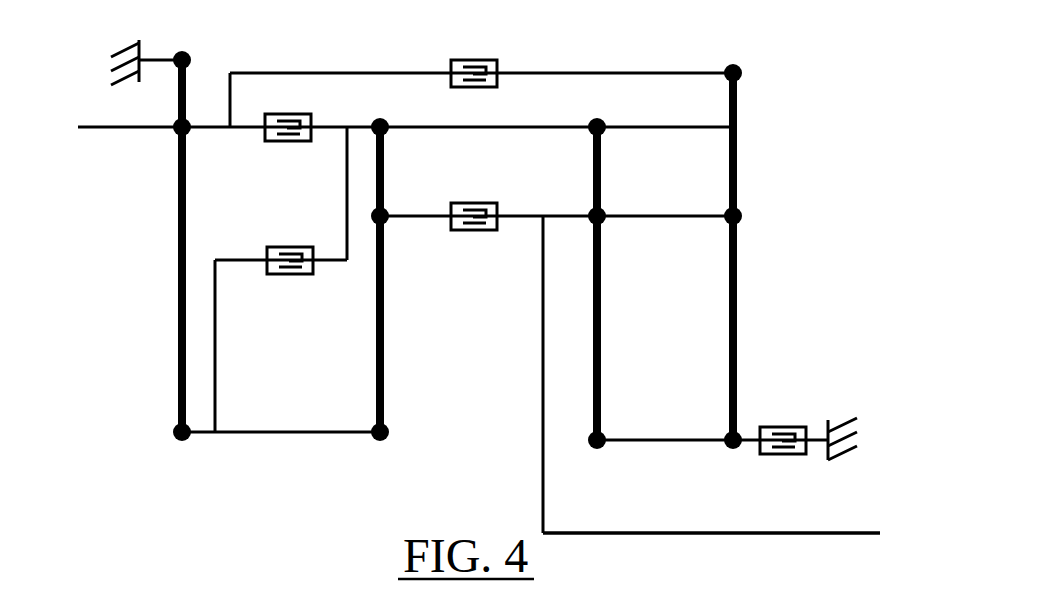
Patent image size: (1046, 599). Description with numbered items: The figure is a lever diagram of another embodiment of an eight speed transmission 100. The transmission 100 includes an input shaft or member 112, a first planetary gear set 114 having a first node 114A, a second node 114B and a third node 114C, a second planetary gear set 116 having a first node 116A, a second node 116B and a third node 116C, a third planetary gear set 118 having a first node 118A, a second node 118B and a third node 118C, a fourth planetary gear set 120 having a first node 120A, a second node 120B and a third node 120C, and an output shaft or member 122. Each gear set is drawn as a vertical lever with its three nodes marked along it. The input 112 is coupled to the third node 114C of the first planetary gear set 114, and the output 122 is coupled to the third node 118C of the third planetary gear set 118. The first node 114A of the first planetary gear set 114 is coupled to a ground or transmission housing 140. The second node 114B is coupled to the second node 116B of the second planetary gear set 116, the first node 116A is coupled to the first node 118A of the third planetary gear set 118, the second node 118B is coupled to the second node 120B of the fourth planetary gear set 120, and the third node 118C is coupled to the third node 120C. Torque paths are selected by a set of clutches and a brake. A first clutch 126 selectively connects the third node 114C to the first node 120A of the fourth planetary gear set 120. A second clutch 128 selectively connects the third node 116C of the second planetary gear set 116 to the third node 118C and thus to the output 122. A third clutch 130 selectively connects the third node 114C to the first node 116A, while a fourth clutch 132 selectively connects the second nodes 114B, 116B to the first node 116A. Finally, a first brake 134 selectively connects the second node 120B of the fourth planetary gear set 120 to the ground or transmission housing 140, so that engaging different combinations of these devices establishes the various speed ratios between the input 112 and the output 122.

The transmission 100 is at (776, 58).
The input shaft or member 112 is at (112, 125).
The first planetary gear set 114 is at (194, 456).
The first node 114A is at (190, 54).
The second node 114B is at (174, 440).
The third node 114C is at (176, 136).
The second planetary gear set 116 is at (360, 456).
The first node 116A is at (390, 120).
The second node 116B is at (390, 424).
The third node 116C is at (388, 222).
The third planetary gear set 118 is at (597, 455).
The first node 118A is at (606, 120).
The second node 118B is at (606, 432).
The third node 118C is at (606, 210).
The fourth planetary gear set 120 is at (733, 455).
The first node 120A is at (742, 77).
The second node 120B is at (724, 436).
The third node 120C is at (744, 212).
The output shaft or member 122 is at (850, 531).
The first clutch 126 is at (497, 82).
The second clutch 128 is at (478, 203).
The third clutch 130 is at (288, 142).
The fourth clutch 132 is at (300, 276).
The first brake 134 is at (780, 426).
The ground or transmission housing 140 is at (142, 50).